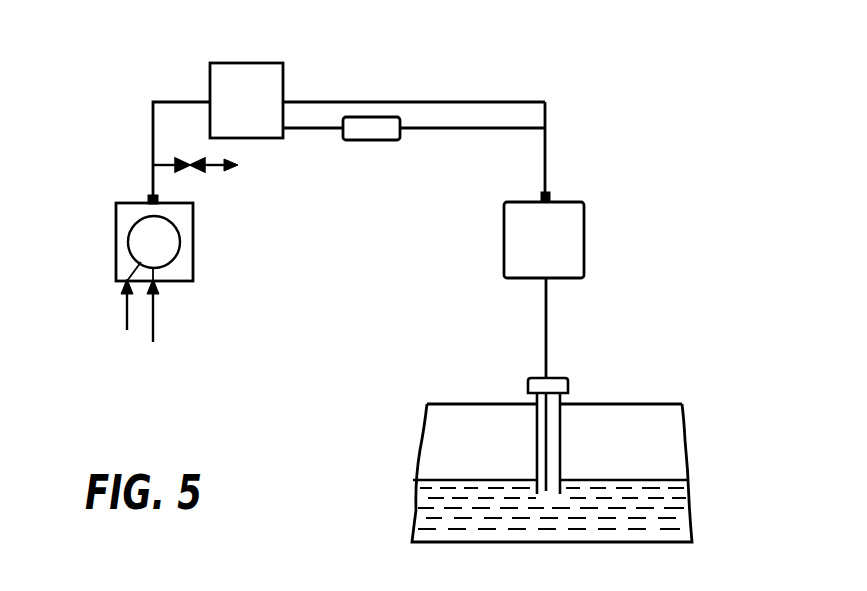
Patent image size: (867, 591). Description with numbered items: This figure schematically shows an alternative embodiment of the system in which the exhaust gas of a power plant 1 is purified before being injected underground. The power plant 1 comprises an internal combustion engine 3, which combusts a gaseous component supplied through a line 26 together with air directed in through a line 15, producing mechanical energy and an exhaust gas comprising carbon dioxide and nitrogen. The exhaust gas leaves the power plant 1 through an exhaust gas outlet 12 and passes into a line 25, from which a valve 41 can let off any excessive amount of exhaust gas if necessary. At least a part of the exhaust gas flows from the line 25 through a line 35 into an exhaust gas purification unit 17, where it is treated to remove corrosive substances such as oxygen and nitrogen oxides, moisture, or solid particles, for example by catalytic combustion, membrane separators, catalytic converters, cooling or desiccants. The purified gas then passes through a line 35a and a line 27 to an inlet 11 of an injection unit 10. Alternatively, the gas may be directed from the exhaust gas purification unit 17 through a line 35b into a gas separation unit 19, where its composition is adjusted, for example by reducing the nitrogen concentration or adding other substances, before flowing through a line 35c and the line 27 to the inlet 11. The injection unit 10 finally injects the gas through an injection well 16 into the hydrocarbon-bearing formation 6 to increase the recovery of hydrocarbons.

The power plant 1 is at (123, 257).
The internal combustion engine 3 is at (143, 231).
The hydrocarbon-bearing formation 6 is at (607, 492).
The injection unit 10 is at (567, 251).
The inlet 11 is at (550, 191).
The exhaust gas outlet 12 is at (146, 197).
The line 15 is at (123, 312).
The injection well 16 is at (537, 428).
The exhaust gas purification unit 17 is at (252, 92).
The gas separation unit 19 is at (377, 135).
The line 25 is at (152, 177).
The line 26 is at (155, 303).
The line 27 is at (548, 147).
The line 35 is at (176, 101).
The line 35a is at (316, 100).
The line 35b is at (328, 133).
The line 35c is at (498, 130).
The valve 41 is at (183, 169).